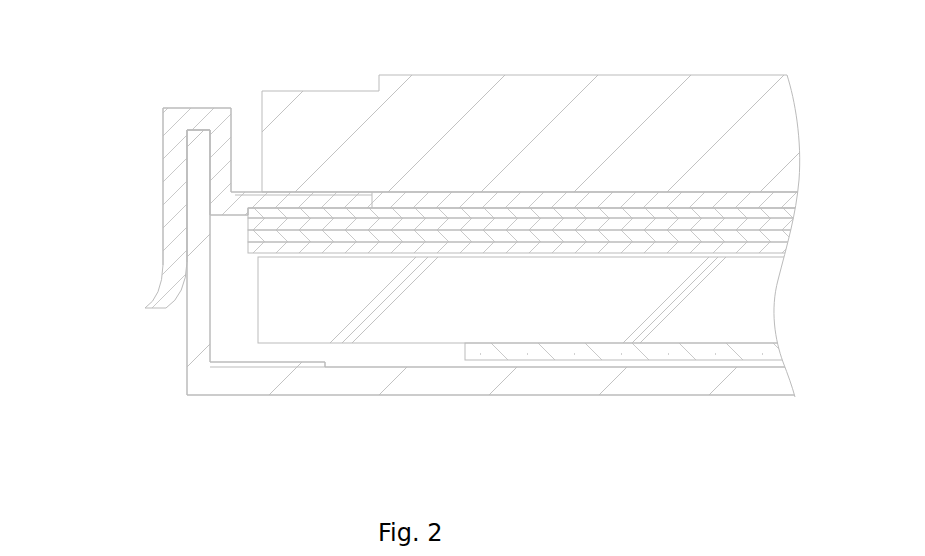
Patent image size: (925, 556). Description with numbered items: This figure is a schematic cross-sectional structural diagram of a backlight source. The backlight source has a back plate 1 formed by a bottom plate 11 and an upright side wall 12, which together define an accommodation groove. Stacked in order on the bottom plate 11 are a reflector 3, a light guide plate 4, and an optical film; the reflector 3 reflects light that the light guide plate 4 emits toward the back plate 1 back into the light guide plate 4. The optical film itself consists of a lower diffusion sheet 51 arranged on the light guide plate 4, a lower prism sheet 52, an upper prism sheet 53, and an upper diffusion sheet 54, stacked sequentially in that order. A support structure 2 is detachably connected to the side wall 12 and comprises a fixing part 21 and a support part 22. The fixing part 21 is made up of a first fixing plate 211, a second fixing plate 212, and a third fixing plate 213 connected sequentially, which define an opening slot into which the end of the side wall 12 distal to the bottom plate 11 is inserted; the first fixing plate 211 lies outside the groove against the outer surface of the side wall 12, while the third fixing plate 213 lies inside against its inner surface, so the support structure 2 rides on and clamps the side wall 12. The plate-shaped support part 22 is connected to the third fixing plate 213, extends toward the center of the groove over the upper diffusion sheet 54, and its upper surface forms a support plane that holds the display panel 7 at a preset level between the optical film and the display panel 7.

The back plate 1 is at (132, 350).
The bottom plate 11 is at (244, 378).
The side wall 12 is at (198, 332).
The support structure 2 is at (60, 26).
The fixing part 21 is at (105, 82).
The first fixing plate 211 is at (183, 145).
The second fixing plate 212 is at (196, 122).
The third fixing plate 213 is at (223, 148).
The support part 22 is at (320, 202).
The reflector 3 is at (679, 342).
The light guide plate 4 is at (510, 313).
The lower diffusion sheet 51 is at (768, 248).
The lower prism sheet 52 is at (765, 240).
The upper prism sheet 53 is at (768, 228).
The upper diffusion sheet 54 is at (768, 215).
The display panel 7 is at (628, 108).